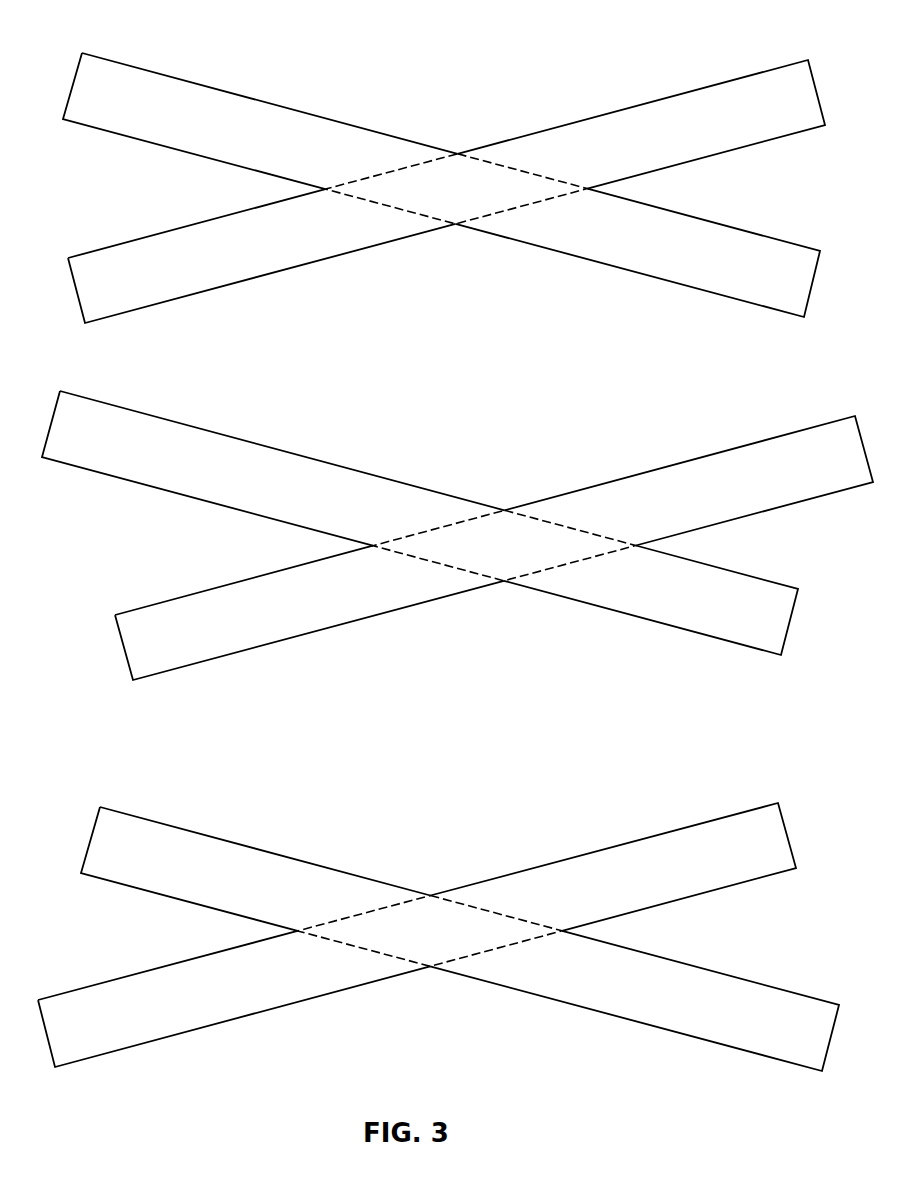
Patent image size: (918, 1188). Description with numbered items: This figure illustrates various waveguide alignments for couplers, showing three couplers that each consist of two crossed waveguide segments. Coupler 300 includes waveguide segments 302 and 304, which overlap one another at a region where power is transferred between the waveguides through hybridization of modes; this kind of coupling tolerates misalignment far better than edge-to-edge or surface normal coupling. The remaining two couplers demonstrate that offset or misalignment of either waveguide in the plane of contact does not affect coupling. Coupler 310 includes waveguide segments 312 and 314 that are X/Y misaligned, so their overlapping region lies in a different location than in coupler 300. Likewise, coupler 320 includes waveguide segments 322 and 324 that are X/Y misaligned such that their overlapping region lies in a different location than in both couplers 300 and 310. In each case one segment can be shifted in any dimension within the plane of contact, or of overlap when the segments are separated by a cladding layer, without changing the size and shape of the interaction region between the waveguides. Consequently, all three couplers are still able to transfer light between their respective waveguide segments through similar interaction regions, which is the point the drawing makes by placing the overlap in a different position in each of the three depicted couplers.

The coupler 300 is at (460, 106).
The waveguide segment 302 is at (223, 112).
The waveguide segment 304 is at (223, 237).
The coupler 310 is at (514, 486).
The waveguide segment 312 is at (201, 452).
The waveguide segment 314 is at (203, 600).
The coupler 320 is at (434, 876).
The waveguide segment 322 is at (241, 866).
The waveguide segment 324 is at (149, 978).